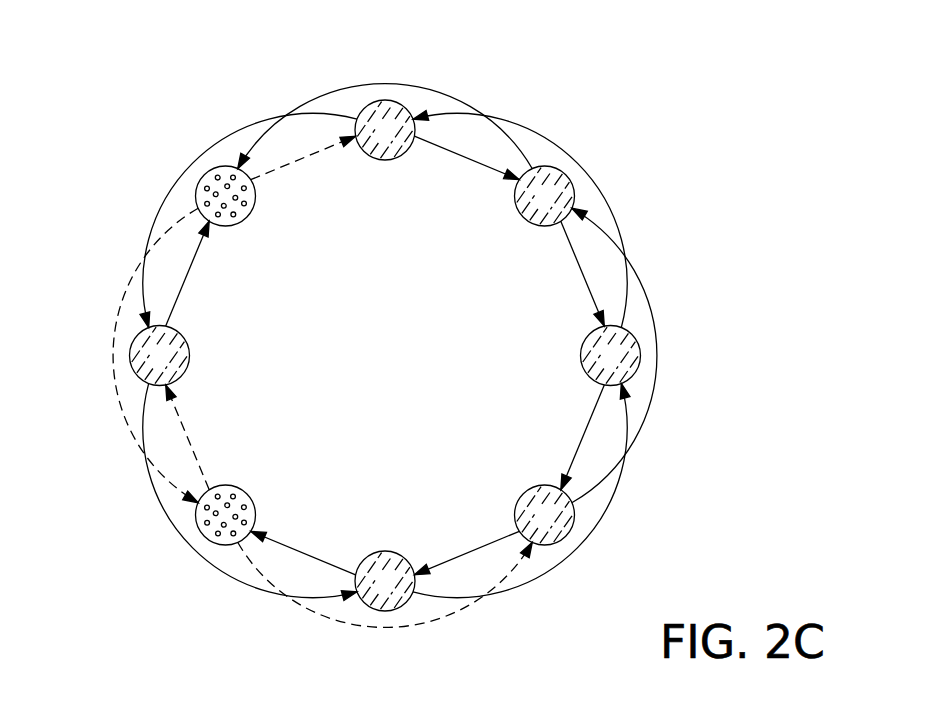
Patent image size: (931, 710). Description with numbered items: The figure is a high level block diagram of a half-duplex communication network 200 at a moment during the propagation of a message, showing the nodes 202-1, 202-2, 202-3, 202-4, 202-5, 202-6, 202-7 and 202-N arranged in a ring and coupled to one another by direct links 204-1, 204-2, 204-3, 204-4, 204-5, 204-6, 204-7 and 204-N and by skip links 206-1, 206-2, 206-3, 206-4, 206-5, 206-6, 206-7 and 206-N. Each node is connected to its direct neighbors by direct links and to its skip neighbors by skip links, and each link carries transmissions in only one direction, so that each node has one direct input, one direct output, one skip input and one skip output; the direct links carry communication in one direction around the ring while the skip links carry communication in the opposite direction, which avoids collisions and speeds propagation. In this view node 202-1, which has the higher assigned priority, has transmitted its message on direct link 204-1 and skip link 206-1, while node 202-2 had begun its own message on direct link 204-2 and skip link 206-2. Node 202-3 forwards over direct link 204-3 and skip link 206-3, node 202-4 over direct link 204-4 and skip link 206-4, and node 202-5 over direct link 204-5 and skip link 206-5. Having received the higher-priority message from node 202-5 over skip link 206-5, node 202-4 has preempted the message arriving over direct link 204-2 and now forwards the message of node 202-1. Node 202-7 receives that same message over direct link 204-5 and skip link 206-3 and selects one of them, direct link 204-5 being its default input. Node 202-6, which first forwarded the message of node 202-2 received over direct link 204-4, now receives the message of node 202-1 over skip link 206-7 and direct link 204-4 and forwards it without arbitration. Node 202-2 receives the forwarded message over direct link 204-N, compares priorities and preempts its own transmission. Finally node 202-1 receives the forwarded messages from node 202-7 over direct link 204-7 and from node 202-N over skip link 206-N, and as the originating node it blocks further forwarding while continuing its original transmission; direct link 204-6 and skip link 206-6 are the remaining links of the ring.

The half-duplex communication network 200 is at (68, 110).
The node 202-1 is at (586, 373).
The node 202-2 is at (248, 497).
The node 202-3 is at (524, 495).
The node 202-4 is at (188, 361).
The node 202-5 is at (375, 158).
The node 202-6 is at (248, 216).
The node 202-7 is at (522, 215).
The node 202-N is at (368, 557).
The direct link 204-1 is at (579, 447).
The direct link 204-2 is at (194, 452).
The direct link 204-3 is at (461, 555).
The direct link 204-4 is at (194, 257).
The direct link 204-5 is at (463, 156).
The direct link 204-6 is at (313, 154).
The direct link 204-7 is at (574, 256).
The direct link 204-N is at (313, 557).
The skip link 206-1 is at (590, 177).
The skip link 206-2 is at (380, 630).
The skip link 206-3 is at (663, 357).
The skip link 206-4 is at (188, 547).
The skip link 206-5 is at (170, 182).
The skip link 206-6 is at (108, 358).
The skip link 206-7 is at (338, 92).
The skip link 206-N is at (583, 545).